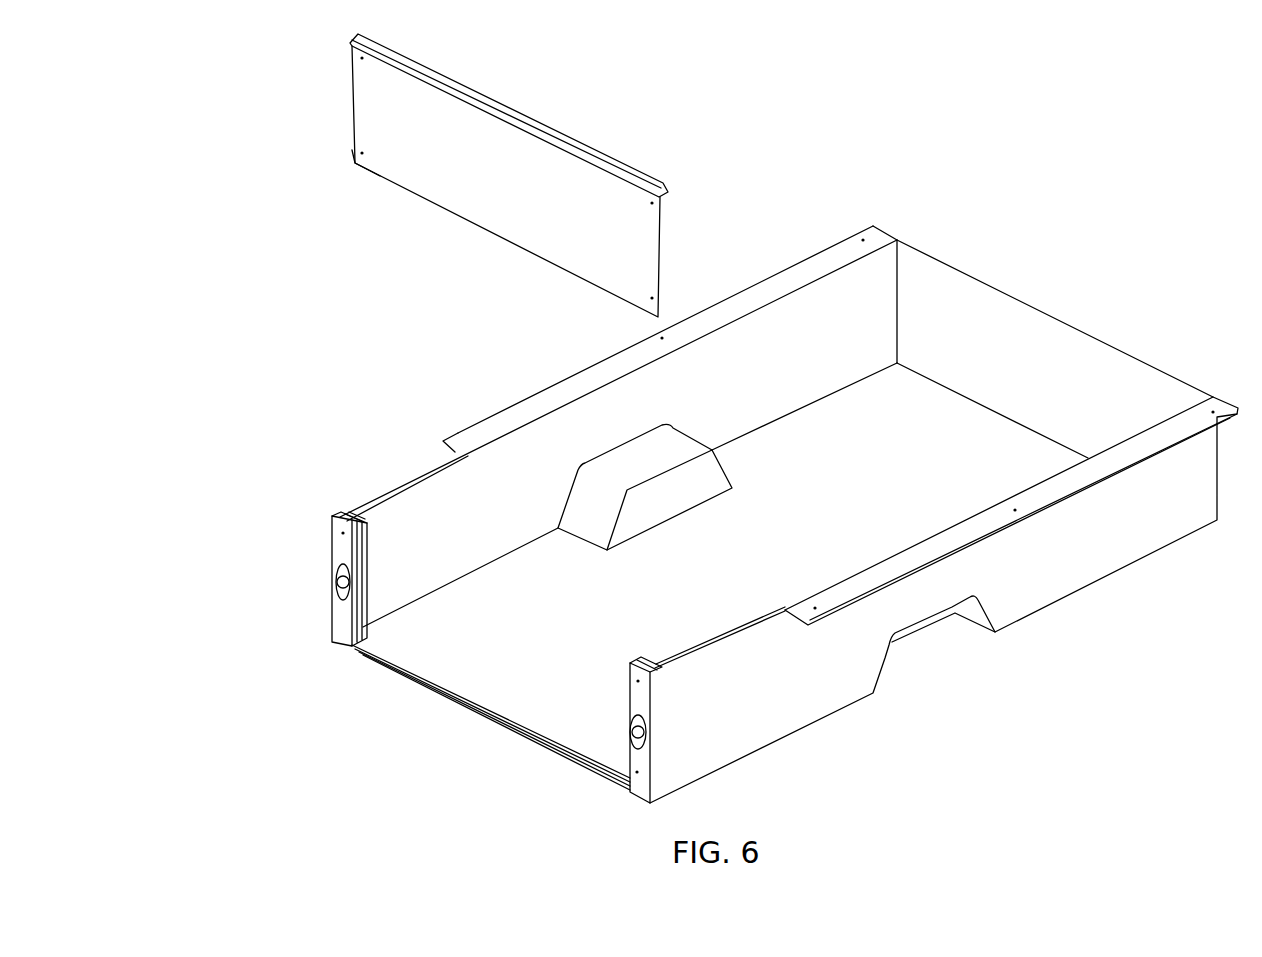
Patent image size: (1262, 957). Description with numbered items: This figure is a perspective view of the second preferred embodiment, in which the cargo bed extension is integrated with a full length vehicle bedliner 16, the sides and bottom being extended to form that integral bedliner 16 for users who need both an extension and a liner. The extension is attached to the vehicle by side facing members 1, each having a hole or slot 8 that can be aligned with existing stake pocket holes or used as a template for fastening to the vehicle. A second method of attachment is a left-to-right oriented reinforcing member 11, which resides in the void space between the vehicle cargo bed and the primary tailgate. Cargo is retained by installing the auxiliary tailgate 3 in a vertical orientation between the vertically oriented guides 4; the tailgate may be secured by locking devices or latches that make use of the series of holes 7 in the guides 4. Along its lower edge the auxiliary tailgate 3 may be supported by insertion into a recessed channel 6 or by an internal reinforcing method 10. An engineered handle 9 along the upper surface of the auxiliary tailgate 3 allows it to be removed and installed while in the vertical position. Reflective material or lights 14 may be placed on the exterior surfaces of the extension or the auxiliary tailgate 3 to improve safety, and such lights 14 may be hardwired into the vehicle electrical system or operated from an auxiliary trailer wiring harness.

The side facing member 1 is at (833, 250).
The auxiliary tailgate 3 is at (428, 162).
The vertically oriented guide 4 is at (652, 660).
The recessed channel 6 is at (552, 743).
The series of holes 7 is at (343, 630).
The hole or slot 8 is at (468, 435).
The engineered handle 9 is at (568, 143).
The internal reinforcing method 10 is at (355, 165).
The reinforcing member 11 is at (765, 752).
The reflective material or lights 14 is at (350, 583).
The vehicle bedliner 16 is at (910, 423).